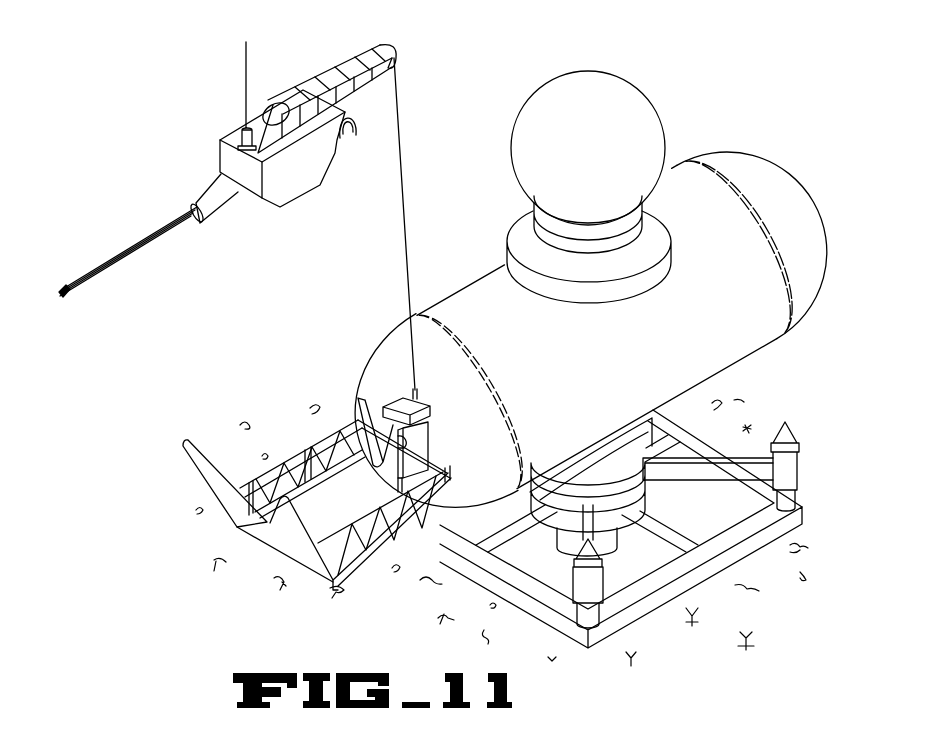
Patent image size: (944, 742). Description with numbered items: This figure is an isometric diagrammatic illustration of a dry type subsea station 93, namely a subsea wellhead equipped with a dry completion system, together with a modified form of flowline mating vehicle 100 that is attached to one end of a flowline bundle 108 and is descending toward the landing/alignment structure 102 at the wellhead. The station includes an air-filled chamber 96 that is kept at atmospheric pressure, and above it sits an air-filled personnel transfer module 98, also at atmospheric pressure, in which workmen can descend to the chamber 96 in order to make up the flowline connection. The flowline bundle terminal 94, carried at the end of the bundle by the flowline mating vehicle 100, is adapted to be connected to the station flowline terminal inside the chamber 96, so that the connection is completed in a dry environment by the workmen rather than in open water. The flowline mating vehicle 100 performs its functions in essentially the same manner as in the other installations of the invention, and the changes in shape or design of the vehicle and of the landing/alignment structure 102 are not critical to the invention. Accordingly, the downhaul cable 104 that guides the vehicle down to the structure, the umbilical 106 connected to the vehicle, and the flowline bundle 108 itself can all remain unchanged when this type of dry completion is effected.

The dry type subsea station 93 is at (776, 375).
The flowline bundle terminal 94 is at (342, 137).
The air-filled chamber 96 is at (629, 353).
The personnel transfer module 98 is at (613, 154).
The flowline mating vehicle 100 is at (218, 153).
The landing/alignment structure 102 is at (262, 533).
The downhaul cable 104 is at (403, 206).
The umbilical 106 is at (246, 87).
The flowline bundle 108 is at (141, 238).